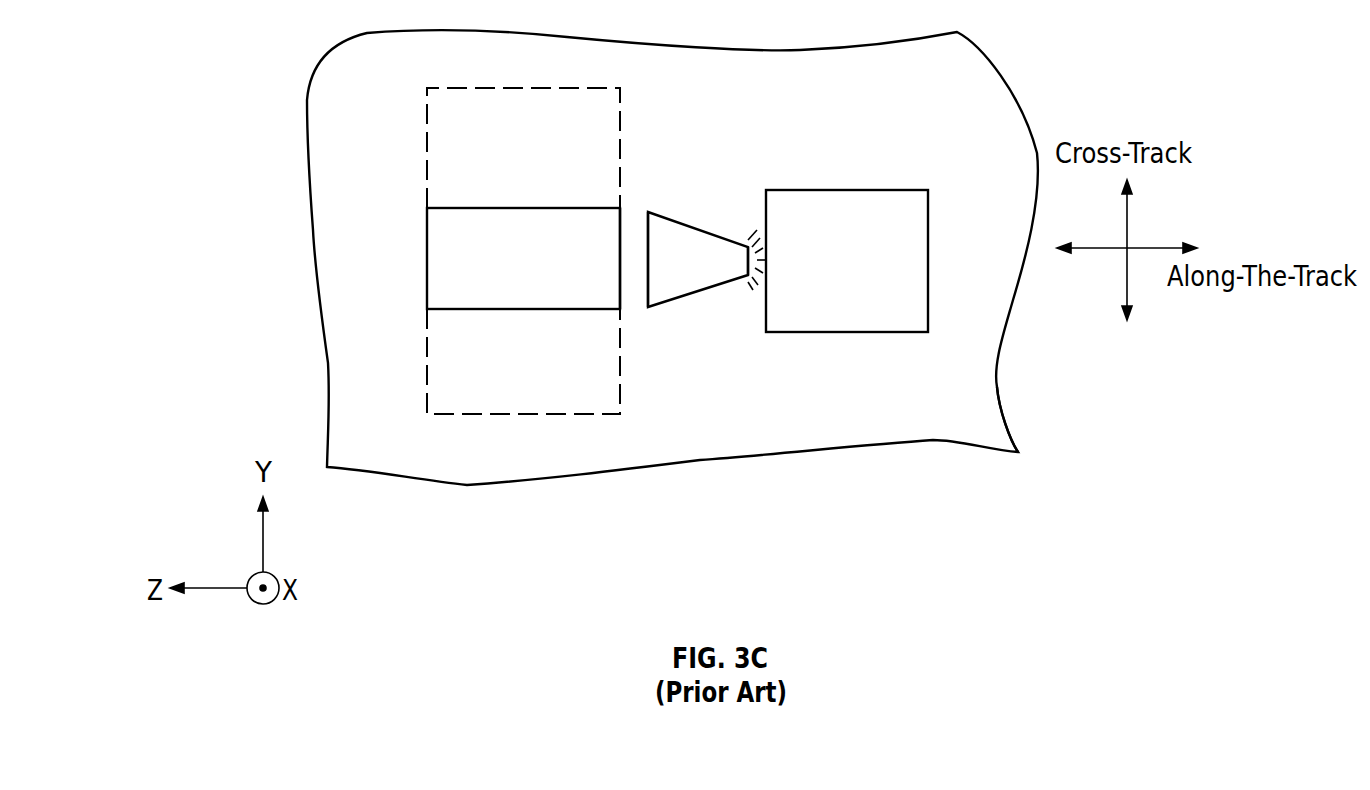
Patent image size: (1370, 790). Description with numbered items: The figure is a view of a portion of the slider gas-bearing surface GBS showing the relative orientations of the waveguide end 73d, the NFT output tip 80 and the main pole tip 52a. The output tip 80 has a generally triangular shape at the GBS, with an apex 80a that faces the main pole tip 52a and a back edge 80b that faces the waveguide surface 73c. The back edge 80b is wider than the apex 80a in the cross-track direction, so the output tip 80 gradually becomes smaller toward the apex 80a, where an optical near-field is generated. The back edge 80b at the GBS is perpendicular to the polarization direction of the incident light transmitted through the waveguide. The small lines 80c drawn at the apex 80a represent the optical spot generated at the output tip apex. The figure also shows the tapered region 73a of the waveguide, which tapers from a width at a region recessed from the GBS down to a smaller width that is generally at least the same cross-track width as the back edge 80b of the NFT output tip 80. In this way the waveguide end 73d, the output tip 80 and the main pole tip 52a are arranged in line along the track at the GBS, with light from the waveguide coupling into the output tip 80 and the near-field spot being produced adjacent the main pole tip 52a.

The tapered region 73a is at (432, 147).
The waveguide surface 73c is at (621, 222).
The waveguide end 73d is at (442, 243).
The NFT output tip 80 is at (650, 212).
The apex 80a is at (745, 262).
The back edge 80b is at (648, 248).
The small lines 80c is at (758, 232).
The main pole tip 52a is at (882, 196).
The gas-bearing surface GBS is at (982, 410).